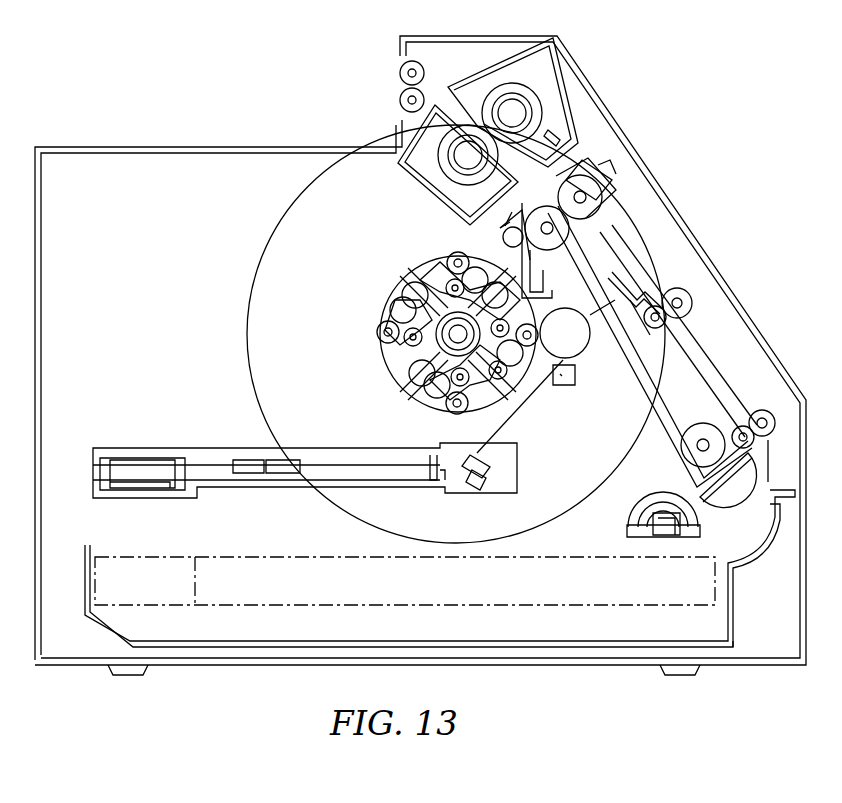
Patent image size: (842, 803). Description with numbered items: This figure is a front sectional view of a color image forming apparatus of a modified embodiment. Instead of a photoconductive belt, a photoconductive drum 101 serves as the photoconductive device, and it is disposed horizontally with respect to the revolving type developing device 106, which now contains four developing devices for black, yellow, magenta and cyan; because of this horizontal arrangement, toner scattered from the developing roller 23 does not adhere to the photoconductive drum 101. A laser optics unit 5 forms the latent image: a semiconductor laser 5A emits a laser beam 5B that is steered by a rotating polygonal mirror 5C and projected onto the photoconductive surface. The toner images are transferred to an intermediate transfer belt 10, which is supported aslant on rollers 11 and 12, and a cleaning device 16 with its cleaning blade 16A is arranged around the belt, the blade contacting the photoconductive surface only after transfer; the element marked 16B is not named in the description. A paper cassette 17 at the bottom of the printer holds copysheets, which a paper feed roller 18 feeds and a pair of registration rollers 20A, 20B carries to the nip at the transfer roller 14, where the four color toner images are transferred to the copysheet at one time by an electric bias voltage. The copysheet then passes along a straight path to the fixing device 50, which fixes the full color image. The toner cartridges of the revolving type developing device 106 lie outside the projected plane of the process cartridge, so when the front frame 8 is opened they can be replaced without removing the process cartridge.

The laser optics unit 5 is at (145, 448).
The semiconductor laser 5A is at (108, 470).
The laser beam 5B is at (148, 490).
The polygonal mirror 5C is at (258, 458).
The front frame 8 is at (632, 130).
The intermediate transfer belt 10 is at (755, 412).
The roller 11 is at (560, 240).
The roller 12 is at (690, 440).
The transfer roller 14 is at (606, 186).
The cleaning device 16 is at (490, 262).
The cleaning blade 16A is at (500, 240).
The roller 16B is at (508, 230).
The paper cassette 17 is at (733, 645).
The paper feed roller 18 is at (703, 520).
The registration roller 20A is at (692, 300).
The registration roller 20B is at (668, 318).
The developing roller 23 is at (445, 413).
The fixing device 50 is at (540, 102).
The photoconductive drum 101 is at (592, 310).
The revolving type developing device 106 is at (378, 296).